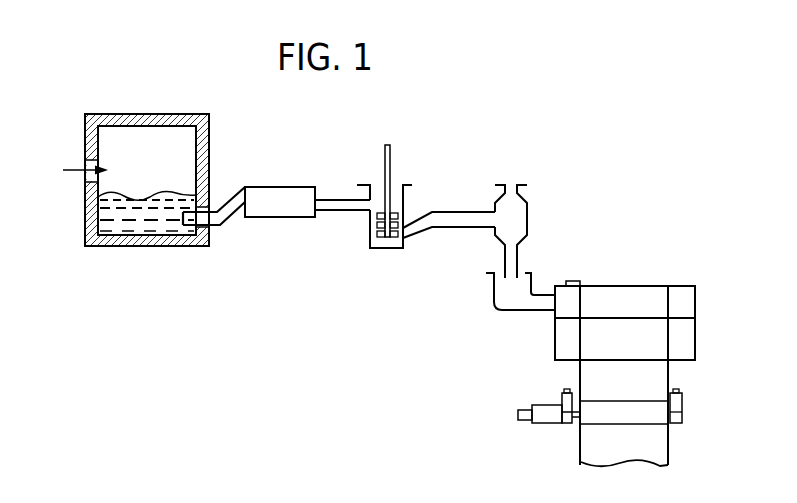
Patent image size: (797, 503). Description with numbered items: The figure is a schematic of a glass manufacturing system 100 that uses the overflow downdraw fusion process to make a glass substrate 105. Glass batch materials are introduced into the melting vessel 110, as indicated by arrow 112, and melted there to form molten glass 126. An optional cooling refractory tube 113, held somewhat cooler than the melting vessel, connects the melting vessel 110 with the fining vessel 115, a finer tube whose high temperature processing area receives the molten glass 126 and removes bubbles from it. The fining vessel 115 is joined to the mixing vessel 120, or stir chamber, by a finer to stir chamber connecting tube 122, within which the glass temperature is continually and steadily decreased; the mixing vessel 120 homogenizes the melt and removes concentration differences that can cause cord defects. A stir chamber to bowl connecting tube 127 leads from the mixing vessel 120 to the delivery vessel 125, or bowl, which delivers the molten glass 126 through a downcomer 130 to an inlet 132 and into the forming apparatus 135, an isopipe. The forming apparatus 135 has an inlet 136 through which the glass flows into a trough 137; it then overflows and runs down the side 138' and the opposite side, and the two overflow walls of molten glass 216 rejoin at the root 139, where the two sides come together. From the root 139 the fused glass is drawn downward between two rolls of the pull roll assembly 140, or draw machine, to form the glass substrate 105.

The glass manufacturing system 100 is at (583, 145).
The glass substrate 105 is at (580, 445).
The melting vessel 110 is at (147, 113).
The arrow 112 is at (68, 170).
The cooling refractory tube 113 is at (229, 186).
The fining vessel 115 is at (290, 187).
The mixing vessel 120 is at (405, 201).
The finer to stir chamber connecting tube 122 is at (347, 212).
The delivery vessel 125 is at (528, 210).
The molten glass 126 is at (173, 193).
The stir chamber to bowl connecting tube 127 is at (465, 228).
The downcomer 130 is at (517, 260).
The inlet 132 is at (493, 310).
The forming apparatus 135 is at (697, 304).
The inlet 136 is at (553, 318).
The trough 137 is at (615, 295).
The side 138' is at (523, 349).
The root 139 is at (643, 362).
The pull roll assembly 140 is at (683, 406).
The overflow walls of molten glass 216 is at (580, 377).